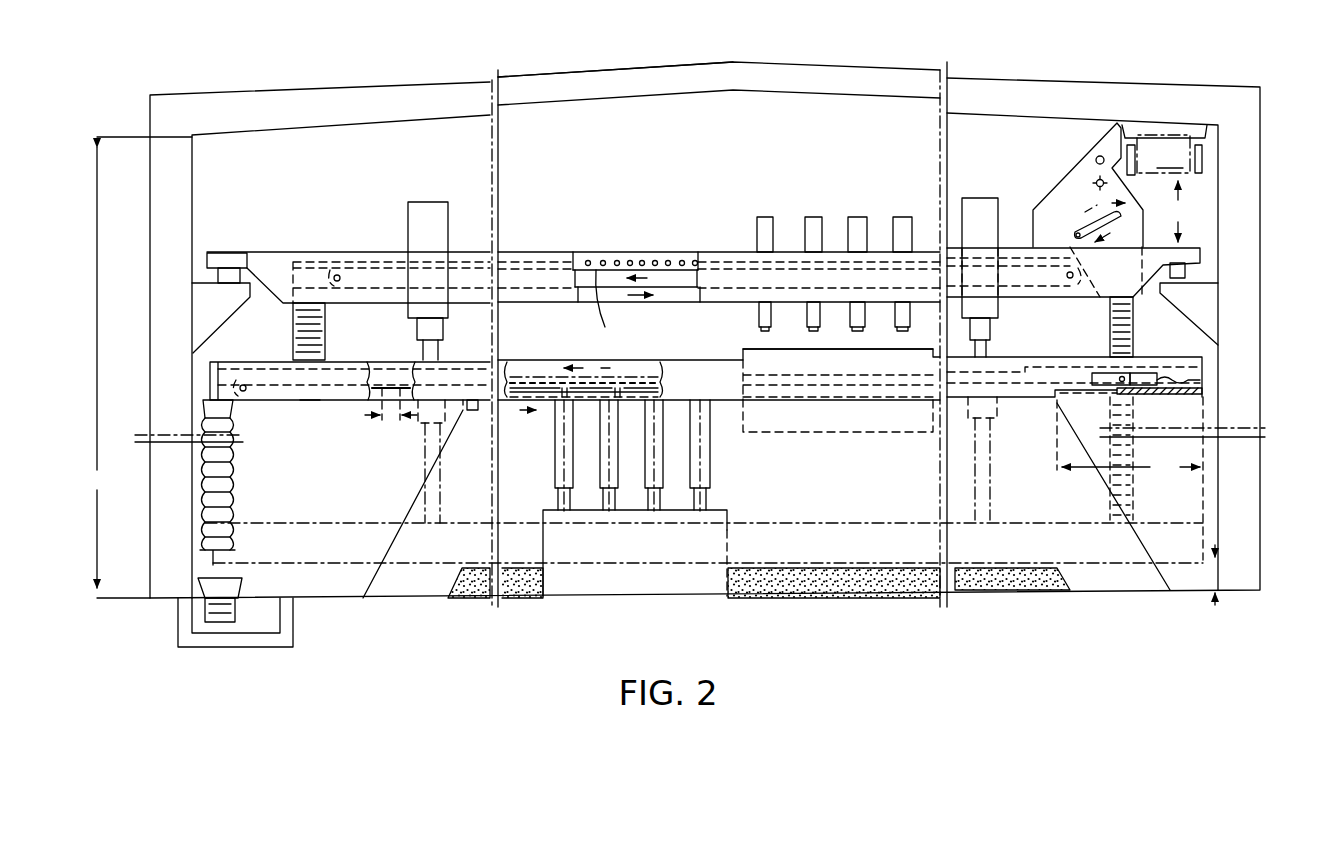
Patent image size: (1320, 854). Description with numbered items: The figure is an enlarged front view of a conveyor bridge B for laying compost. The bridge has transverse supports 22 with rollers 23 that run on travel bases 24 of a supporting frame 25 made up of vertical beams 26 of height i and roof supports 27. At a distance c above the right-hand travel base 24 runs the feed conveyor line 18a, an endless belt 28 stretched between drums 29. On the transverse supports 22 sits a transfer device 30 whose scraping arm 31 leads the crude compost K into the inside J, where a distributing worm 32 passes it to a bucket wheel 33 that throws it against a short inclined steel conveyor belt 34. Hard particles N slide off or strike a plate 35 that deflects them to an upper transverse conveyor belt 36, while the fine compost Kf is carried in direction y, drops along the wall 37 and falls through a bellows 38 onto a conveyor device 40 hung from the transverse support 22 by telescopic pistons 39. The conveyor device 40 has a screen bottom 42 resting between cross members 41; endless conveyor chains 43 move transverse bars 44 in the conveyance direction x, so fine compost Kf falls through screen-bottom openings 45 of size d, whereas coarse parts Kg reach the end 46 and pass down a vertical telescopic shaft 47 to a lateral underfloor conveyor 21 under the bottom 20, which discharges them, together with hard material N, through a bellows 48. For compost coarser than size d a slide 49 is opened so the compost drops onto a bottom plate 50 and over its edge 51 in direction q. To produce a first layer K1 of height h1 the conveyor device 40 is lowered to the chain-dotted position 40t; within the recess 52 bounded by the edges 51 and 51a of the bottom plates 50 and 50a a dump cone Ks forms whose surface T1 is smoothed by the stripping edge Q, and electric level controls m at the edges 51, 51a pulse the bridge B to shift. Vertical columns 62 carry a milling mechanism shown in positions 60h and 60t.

The conveyor line 18a is at (1152, 150).
The bottom 20 is at (323, 594).
The lateral underfloor conveyor 21 is at (200, 590).
The transverse supports 22 is at (541, 260).
The rollers 23 is at (228, 275).
The travel bases 24 is at (208, 315).
The supporting frame 25 is at (1245, 467).
The vertical beams 26 is at (1250, 400).
The roof supports 27 is at (575, 88).
The endless belt 28 is at (1163, 154).
The drums 29 is at (1204, 157).
The transfer device 30 is at (1060, 201).
The scraping arm 31 is at (1137, 126).
The distributing worm 32 is at (1097, 155).
The bucket wheel 33 is at (1095, 180).
The steel conveyor belt 34 is at (1080, 231).
The plate 35 is at (1092, 186).
The upper transverse conveyor belt 36 is at (605, 309).
The wall 37 is at (1148, 190).
The bellows 38 is at (1135, 325).
The telescopic pistons 39 is at (430, 200).
The conveyor device 40 is at (695, 373).
The lowered position of conveyor device 40t is at (815, 559).
The cross members 41 is at (1018, 358).
The screen bottom 42 is at (518, 385).
The endless conveyor chains 43 is at (540, 372).
The transverse bars 44 is at (580, 386).
The screen-bottom openings 45 is at (395, 380).
The end 46 is at (243, 382).
The vertical telescopic shaft 47 is at (220, 413).
The bellows 48 is at (318, 325).
The slide 49 is at (1140, 376).
The bottom plate 50 is at (1170, 395).
The another bottom plate 50a is at (310, 402).
The edge 51 is at (1078, 398).
The edge 51a is at (468, 411).
The recess 52 is at (510, 405).
The upper position of milling mechanism 60h is at (758, 362).
The lower position of milling mechanism 60t is at (717, 518).
The vertical columns 62 is at (858, 222).
The conveyor bridge B is at (647, 243).
The hard particles N is at (629, 261).
The inside of the transfer device J is at (1045, 208).
The crude compost K is at (1070, 577).
The first compost layer K1 is at (860, 596).
The fine compost Kf is at (618, 382).
The coarse parts Kg is at (222, 481).
The dump cone Ks is at (393, 550).
The stripping edge Q is at (722, 403).
The surface T1 is at (785, 571).
The distance c is at (1178, 211).
The size of screen-bottom openings d is at (392, 420).
The height of first compost layer h1 is at (1218, 578).
The height of vertical beams i is at (99, 483).
The electric level controls m is at (471, 410).
The drop direction q is at (1040, 405).
The direction of conveyance x is at (587, 368).
The direction of fine compost y is at (1105, 202).